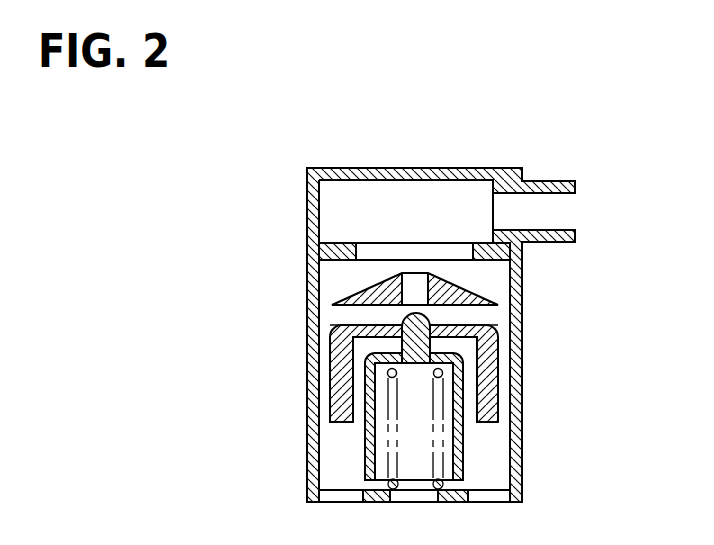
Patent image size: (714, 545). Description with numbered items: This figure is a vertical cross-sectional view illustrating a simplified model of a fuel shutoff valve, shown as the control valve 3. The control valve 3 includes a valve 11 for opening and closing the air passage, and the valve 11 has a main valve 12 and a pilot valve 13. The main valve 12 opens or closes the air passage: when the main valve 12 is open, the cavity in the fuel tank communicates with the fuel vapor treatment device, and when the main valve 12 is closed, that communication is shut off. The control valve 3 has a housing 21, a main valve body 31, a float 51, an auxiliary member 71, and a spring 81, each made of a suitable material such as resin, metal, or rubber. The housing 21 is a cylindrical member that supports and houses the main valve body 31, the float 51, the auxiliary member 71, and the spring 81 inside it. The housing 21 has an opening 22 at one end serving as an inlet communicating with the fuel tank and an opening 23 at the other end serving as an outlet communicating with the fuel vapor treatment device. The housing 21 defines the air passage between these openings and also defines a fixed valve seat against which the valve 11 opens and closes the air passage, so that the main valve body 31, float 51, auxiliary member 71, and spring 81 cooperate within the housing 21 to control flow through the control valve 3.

The control valve 3 is at (543, 173).
The valve 11 is at (535, 300).
The main valve 12 is at (470, 273).
The pilot valve 13 is at (457, 312).
The housing 21 is at (333, 246).
The opening 22 is at (332, 489).
The opening 23 is at (577, 218).
The main valve body 31 is at (350, 300).
The float 51 is at (362, 361).
The auxiliary member 71 is at (336, 331).
The spring 81 is at (388, 452).